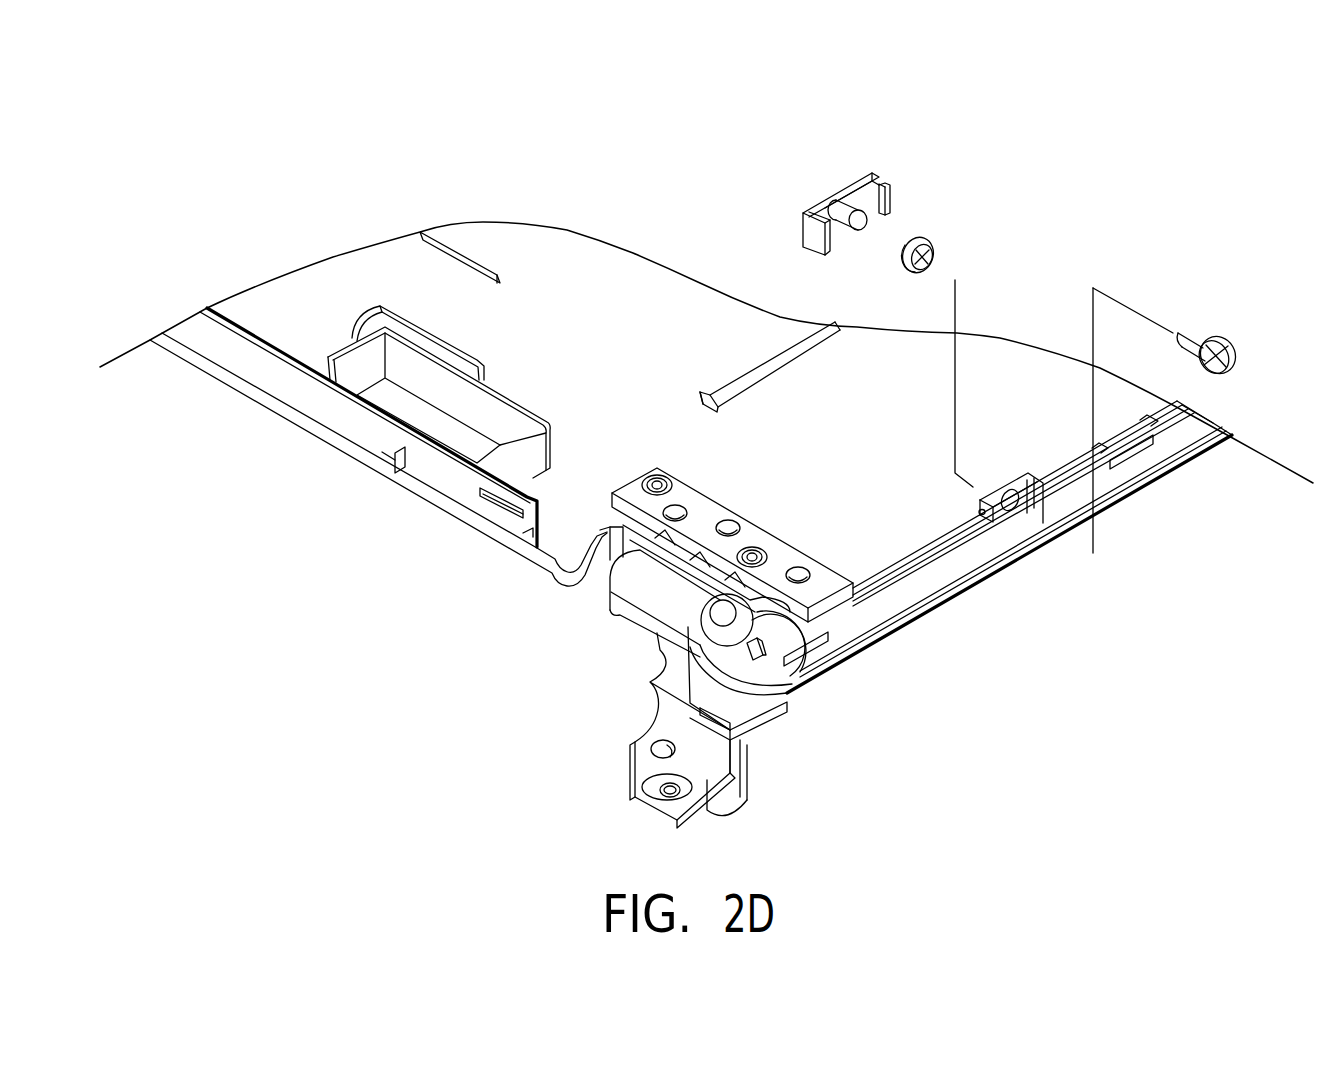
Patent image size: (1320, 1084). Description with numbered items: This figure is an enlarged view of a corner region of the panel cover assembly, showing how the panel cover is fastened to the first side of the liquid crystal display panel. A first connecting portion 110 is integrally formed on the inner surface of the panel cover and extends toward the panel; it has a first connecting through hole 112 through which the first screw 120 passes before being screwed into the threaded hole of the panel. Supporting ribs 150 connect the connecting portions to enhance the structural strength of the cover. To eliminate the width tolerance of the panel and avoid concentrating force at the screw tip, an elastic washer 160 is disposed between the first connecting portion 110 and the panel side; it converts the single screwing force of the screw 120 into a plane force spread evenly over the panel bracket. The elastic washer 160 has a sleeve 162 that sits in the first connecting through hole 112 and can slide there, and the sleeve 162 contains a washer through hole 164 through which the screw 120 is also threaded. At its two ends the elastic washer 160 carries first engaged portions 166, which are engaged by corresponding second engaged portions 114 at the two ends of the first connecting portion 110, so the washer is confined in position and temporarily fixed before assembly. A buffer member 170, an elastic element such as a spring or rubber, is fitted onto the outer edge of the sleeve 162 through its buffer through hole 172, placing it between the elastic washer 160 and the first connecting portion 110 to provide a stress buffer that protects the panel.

The first connecting portion 110 is at (1040, 473).
The first connecting through hole 112 is at (1010, 505).
The second engaged portion 114 is at (982, 513).
The first screw 120 is at (1222, 343).
The supporting rib 150 is at (1172, 430).
The elastic washer 160 is at (868, 158).
The sleeve 162 is at (830, 205).
The washer through hole 164 is at (860, 220).
The first engaged portion 166 is at (895, 192).
The buffer member 170 is at (983, 263).
The buffer through hole 172 is at (933, 258).